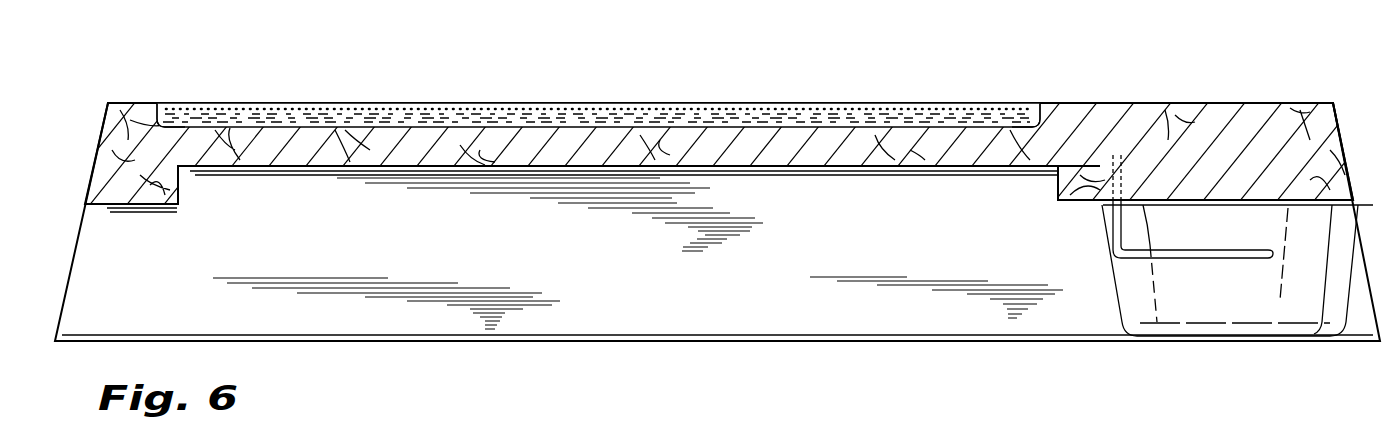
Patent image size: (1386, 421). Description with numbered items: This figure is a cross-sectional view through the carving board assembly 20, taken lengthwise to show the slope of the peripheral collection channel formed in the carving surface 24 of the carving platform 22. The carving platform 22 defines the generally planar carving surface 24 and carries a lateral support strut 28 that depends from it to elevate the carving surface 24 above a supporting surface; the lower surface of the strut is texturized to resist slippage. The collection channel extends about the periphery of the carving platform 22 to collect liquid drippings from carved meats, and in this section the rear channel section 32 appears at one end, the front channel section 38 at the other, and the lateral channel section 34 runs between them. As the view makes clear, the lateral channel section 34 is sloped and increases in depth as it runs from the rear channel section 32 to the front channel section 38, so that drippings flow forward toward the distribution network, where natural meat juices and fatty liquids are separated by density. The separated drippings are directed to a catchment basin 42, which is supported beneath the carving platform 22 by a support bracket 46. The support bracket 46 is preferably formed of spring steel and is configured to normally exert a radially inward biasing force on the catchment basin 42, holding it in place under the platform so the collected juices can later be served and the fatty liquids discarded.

The carving board assembly 20 is at (692, 83).
The carving platform 22 is at (1238, 118).
The carving surface 24 is at (1125, 107).
The lateral support strut 28 is at (1065, 303).
The rear channel section 32 is at (172, 112).
The lateral channel section 34 is at (475, 130).
The front channel section 38 is at (1032, 125).
The catchment basin 42 is at (1257, 297).
The support bracket 46 is at (1200, 260).